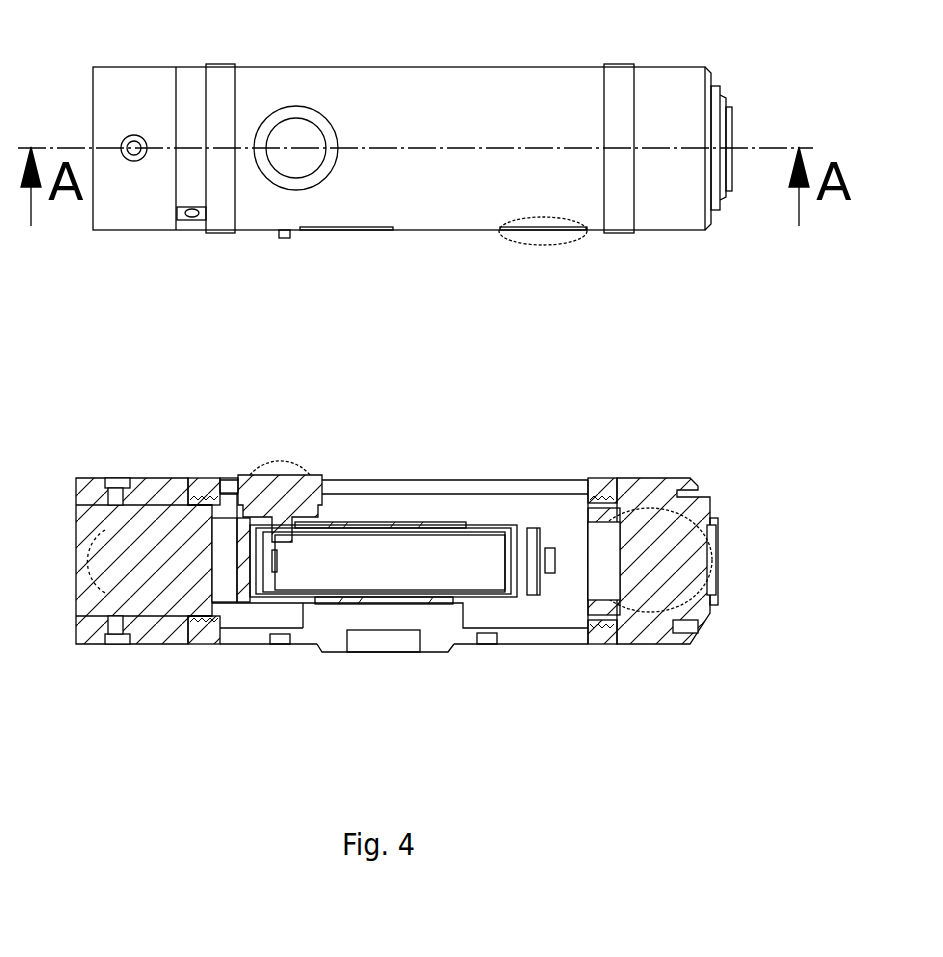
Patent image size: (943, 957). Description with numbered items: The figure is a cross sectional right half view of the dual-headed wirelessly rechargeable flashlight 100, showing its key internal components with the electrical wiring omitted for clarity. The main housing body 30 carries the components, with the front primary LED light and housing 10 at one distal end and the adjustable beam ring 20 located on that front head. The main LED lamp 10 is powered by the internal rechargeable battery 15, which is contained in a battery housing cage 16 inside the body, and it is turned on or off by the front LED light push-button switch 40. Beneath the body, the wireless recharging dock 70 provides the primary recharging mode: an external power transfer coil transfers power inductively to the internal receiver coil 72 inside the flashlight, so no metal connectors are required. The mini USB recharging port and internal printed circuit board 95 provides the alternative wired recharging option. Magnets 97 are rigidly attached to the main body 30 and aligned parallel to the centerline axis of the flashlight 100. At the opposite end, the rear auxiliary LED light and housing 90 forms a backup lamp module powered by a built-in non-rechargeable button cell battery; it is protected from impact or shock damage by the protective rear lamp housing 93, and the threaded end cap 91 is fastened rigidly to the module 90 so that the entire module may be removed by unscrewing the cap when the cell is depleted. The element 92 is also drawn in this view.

The front primary LED light and housing 10 is at (160, 573).
The rechargeable battery 15 is at (373, 562).
The battery housing cage 16 is at (243, 598).
The adjustable beam ring 20 is at (203, 492).
The main housing body 30 is at (419, 486).
The front LED light push-button switch 40 is at (257, 509).
The wireless recharging dock 70 is at (381, 645).
The internal receiver coil 72 is at (329, 598).
The rear auxiliary LED light and housing 90 is at (663, 559).
The threaded end cap 91 is at (609, 630).
The lens barrel 92 is at (602, 565).
The protective rear lamp housing 93 is at (693, 637).
The mini USB recharging port and internal printed circuit board 95 is at (550, 562).
The magnets 97 is at (274, 643).
The dual-headed wirelessly rechargeable flashlight 100 is at (413, 561).